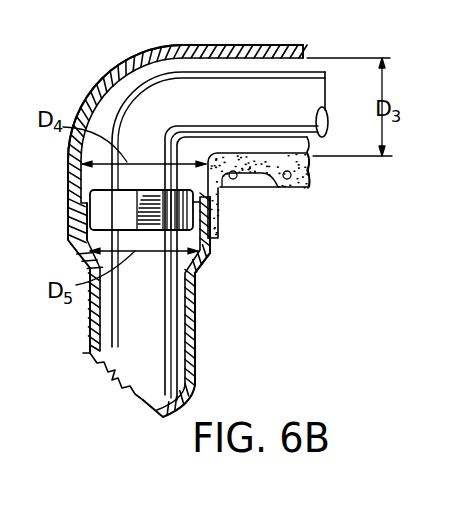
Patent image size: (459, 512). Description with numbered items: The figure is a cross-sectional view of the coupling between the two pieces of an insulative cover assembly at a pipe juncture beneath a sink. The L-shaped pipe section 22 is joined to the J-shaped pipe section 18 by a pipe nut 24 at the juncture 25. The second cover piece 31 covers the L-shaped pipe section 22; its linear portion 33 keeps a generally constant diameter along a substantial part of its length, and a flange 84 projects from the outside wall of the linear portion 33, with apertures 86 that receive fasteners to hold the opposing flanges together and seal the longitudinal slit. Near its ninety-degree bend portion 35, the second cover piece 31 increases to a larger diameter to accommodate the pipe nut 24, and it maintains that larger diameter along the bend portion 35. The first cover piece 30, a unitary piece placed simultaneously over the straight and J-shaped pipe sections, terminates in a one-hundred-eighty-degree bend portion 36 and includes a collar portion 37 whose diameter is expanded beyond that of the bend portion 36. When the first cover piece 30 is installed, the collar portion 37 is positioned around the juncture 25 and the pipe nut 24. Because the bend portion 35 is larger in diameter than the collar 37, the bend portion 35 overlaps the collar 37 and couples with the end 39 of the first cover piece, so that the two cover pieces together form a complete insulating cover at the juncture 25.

The J-shaped pipe section 18 is at (113, 387).
The L-shaped pipe section 22 is at (313, 89).
The pipe nut 24 is at (90, 195).
The juncture 25 is at (110, 185).
The first cover piece 30 is at (197, 350).
The second cover piece 31 is at (241, 44).
The linear portion 33 is at (289, 45).
The 90° bend portion 35 is at (107, 76).
The 180° bend portion 36 is at (88, 347).
The collar portion 37 is at (208, 265).
The end of the bend portion 39 is at (217, 198).
The flange 84 is at (310, 175).
The apertures 86 is at (287, 179).